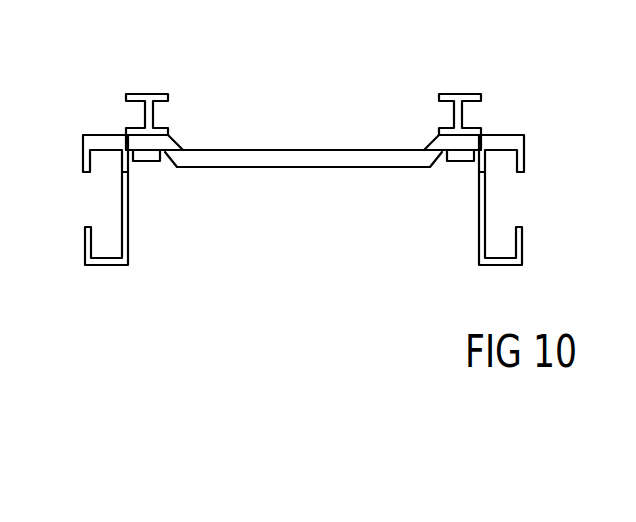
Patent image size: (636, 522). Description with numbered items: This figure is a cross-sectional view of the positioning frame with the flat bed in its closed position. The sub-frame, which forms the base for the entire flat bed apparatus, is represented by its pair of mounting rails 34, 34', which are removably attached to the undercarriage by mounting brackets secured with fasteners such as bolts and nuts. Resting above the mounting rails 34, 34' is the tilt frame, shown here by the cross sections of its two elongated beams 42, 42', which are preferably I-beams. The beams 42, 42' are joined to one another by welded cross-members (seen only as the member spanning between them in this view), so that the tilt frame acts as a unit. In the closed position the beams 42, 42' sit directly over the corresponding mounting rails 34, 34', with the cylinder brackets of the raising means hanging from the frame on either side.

The elongated beam 42 is at (117, 94).
The elongated beam 42' is at (486, 93).
The mounting rail 34 is at (173, 188).
The mounting rail 34' is at (430, 187).